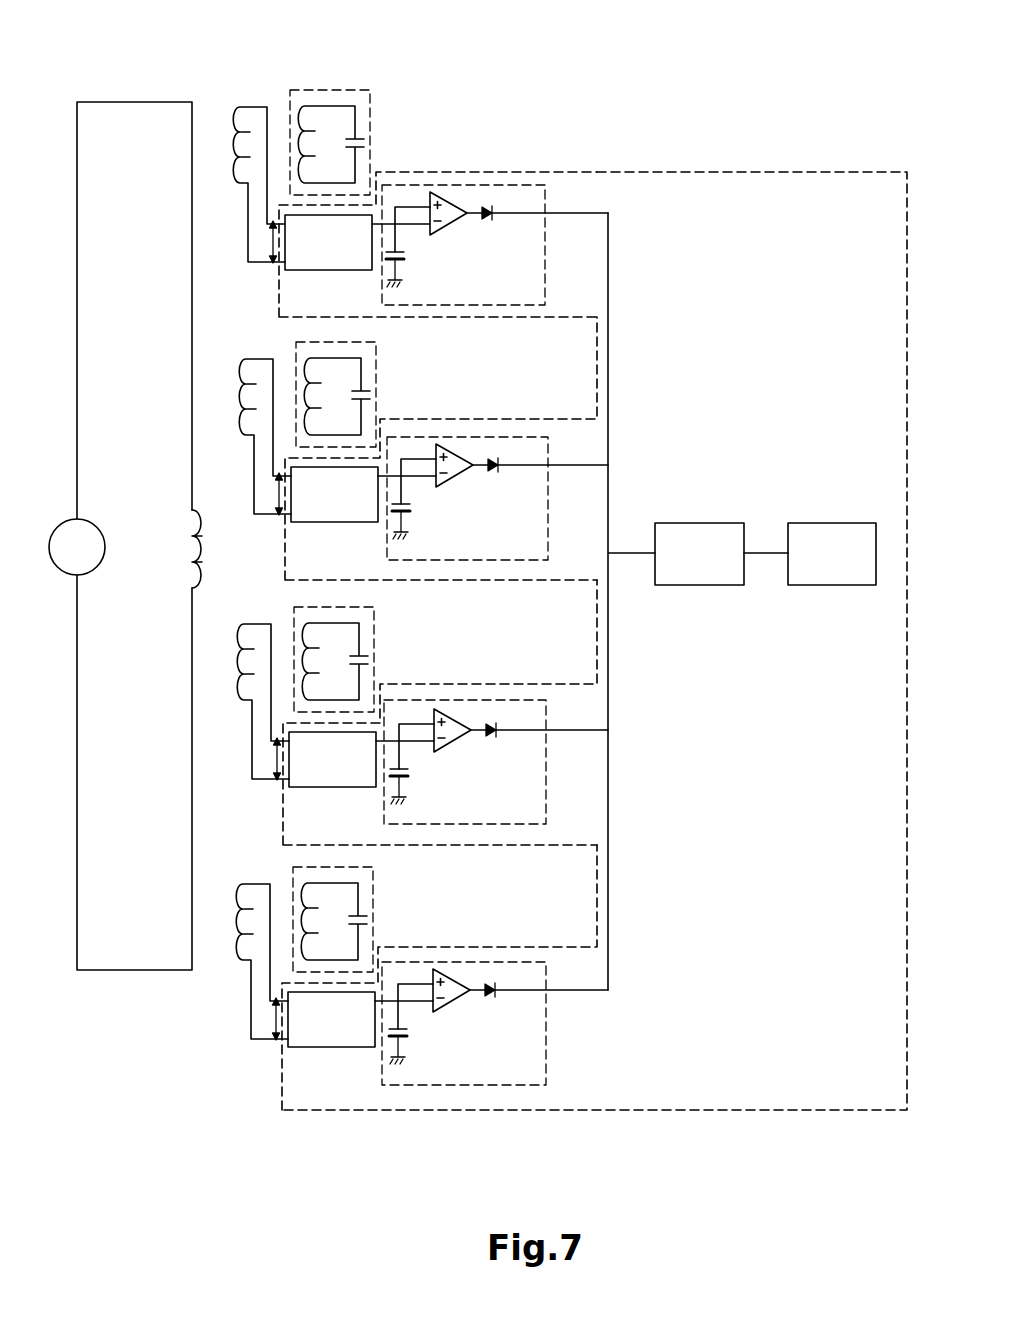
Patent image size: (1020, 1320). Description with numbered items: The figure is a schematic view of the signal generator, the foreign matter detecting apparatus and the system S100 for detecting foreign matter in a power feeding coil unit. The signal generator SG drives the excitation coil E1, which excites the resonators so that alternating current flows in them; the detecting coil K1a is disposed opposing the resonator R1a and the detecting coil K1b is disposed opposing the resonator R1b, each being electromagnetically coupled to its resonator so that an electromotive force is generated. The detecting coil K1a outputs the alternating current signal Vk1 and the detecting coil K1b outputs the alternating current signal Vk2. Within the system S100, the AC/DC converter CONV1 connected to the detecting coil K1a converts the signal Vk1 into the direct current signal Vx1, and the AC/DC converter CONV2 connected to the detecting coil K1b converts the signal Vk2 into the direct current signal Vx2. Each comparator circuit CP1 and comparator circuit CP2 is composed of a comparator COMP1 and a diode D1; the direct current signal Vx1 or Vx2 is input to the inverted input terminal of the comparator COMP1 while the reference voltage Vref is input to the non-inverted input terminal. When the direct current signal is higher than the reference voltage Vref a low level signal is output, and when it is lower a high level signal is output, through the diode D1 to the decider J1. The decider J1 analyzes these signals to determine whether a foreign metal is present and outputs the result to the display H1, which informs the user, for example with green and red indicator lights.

The signal generator SG is at (88, 520).
The excitation coil E1 is at (192, 550).
The detecting coil K1a is at (250, 107).
The detecting coil K1b is at (243, 360).
The resonator R1a is at (372, 140).
The resonator R1b is at (378, 402).
The AC/DC converter CONV1 is at (360, 270).
The AC/DC converter CONV2 is at (367, 520).
The alternating current signal Vk1 is at (272, 238).
The alternating current signal Vk2 is at (280, 488).
The direct current signal Vx1 is at (410, 225).
The direct current signal Vx2 is at (417, 478).
The reference voltage Vref is at (403, 260).
The comparator COMP1 is at (457, 185).
The diode D1 is at (497, 614).
The comparator circuit CP1 is at (545, 175).
The comparator circuit CP2 is at (528, 437).
The system for detecting foreign matter S100 is at (783, 173).
The decider J1 is at (708, 522).
The display H1 is at (833, 522).